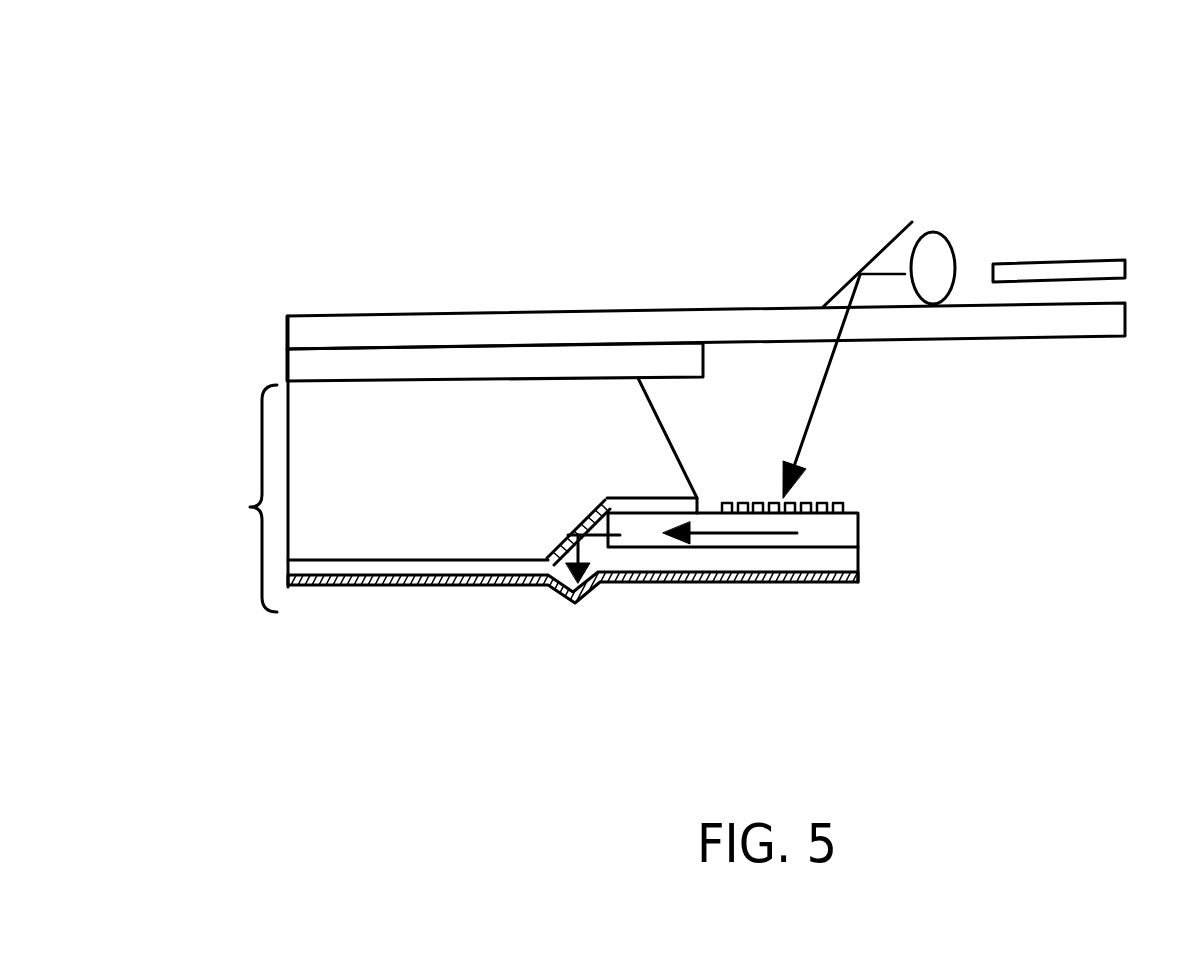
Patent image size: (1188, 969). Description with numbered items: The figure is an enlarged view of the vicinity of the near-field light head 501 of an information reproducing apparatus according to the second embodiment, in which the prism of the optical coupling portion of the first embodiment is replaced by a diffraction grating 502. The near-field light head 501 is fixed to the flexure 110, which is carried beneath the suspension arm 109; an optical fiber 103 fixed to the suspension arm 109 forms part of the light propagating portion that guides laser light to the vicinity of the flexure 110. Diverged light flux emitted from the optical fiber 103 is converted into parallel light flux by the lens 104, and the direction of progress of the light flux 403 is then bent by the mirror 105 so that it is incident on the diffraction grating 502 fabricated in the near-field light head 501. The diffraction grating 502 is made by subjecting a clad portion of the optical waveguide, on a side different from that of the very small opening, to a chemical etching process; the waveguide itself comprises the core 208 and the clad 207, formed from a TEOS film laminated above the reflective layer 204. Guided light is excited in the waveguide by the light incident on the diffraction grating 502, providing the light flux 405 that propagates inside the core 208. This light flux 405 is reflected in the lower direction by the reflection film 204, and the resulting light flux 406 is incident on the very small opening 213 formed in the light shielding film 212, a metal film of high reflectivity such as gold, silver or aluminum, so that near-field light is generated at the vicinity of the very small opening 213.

The optical fiber 103 is at (1082, 262).
The lens 104 is at (942, 231).
The mirror 105 is at (878, 255).
The suspension arm 109 is at (1025, 325).
The flexure 110 is at (450, 365).
The reflective layer 204 is at (568, 535).
The clad 207 is at (860, 548).
The core 208 is at (860, 523).
The light shielding film 212 is at (410, 585).
The very small opening 213 is at (580, 600).
The light flux 403 is at (816, 400).
The light flux 405 is at (733, 535).
The light flux 406 is at (592, 535).
The near-field light head 501 is at (227, 498).
The diffraction grating 502 is at (813, 505).